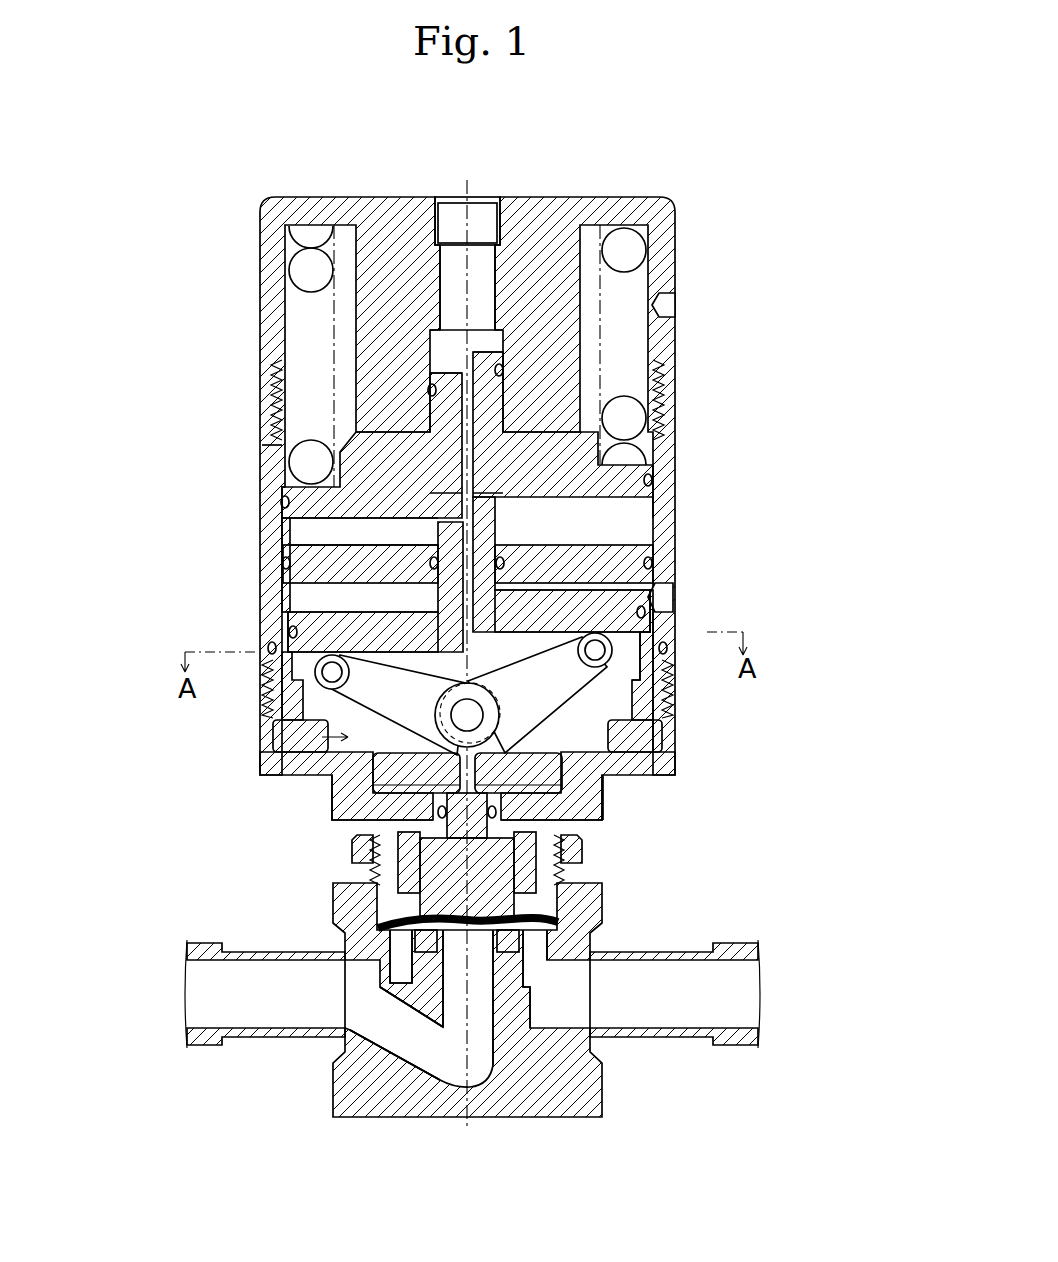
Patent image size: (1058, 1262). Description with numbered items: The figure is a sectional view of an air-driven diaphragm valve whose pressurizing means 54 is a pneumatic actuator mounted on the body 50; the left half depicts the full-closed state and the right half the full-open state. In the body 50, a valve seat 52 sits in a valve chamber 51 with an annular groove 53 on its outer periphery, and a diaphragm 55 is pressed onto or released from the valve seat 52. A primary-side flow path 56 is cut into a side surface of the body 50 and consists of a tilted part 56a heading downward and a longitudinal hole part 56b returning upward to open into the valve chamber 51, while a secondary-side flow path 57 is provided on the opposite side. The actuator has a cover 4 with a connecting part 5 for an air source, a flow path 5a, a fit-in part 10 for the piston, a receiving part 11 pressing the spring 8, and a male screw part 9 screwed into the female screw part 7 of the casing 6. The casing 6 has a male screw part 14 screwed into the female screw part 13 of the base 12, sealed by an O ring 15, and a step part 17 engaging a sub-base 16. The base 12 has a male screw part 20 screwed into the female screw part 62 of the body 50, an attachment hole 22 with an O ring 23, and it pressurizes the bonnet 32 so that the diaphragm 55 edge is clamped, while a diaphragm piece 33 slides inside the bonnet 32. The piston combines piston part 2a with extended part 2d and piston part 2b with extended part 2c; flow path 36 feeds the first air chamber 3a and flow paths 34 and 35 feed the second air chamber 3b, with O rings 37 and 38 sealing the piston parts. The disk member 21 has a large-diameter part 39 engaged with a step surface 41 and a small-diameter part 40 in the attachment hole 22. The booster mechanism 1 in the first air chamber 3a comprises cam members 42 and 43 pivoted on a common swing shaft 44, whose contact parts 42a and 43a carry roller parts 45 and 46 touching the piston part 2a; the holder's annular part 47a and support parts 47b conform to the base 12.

The booster mechanism 1 is at (262, 772).
The piston part 2a is at (330, 610).
The piston part 2b is at (615, 480).
The extended part 2c is at (503, 397).
The extended part 2d is at (495, 515).
The first air chamber 3a is at (672, 590).
The second air chamber 3b is at (655, 505).
The cover 4 is at (630, 208).
The connecting part 5 is at (448, 203).
The flow path 5a is at (487, 255).
The casing 6 is at (268, 450).
The female screw part 7 is at (275, 395).
The spring 8 is at (668, 242).
The male screw part 9 is at (668, 385).
The fit-in part 10 is at (438, 338).
The receiving part 11 is at (305, 255).
The base 12 is at (603, 800).
The female screw part 13 is at (360, 698).
The male screw part 14 is at (612, 660).
The O ring 15 is at (675, 650).
The sub-base 16 is at (597, 557).
The step part 17 is at (300, 628).
The male screw part 20 is at (575, 860).
The disk member 21 is at (560, 790).
The attachment hole 22 is at (565, 812).
The O ring 23 is at (355, 848).
The bonnet 32 is at (520, 895).
The diaphragm piece 33 is at (530, 865).
The flow path 34 is at (665, 410).
The flow path 35 is at (455, 540).
The flow path 36 is at (430, 563).
The O ring 37 is at (600, 615).
The O ring 38 is at (300, 505).
The large-diameter part 39 is at (300, 765).
The small-diameter part 40 is at (400, 840).
The step surface 41 is at (373, 760).
The cam member 42 is at (660, 730).
The contact part 42a is at (672, 615).
The cam member 43 is at (312, 730).
The contact part 43a is at (293, 630).
The swing shaft 44 is at (650, 743).
The roller part 45 is at (673, 680).
The roller part 46 is at (270, 688).
The annular part 47a is at (635, 765).
The support part 47b is at (610, 785).
The body 50 is at (558, 1100).
The valve chamber 51 is at (415, 940).
The valve seat 52 is at (560, 928).
The annular groove 53 is at (255, 992).
The pressurizing means 54 is at (690, 269).
The diaphragm 55 is at (377, 928).
The primary-side flow path 56 is at (355, 1020).
The tilted part 56a is at (420, 1070).
The longitudinal hole part 56b is at (485, 1087).
The secondary-side flow path 57 is at (567, 995).
The female screw part 62 is at (375, 860).